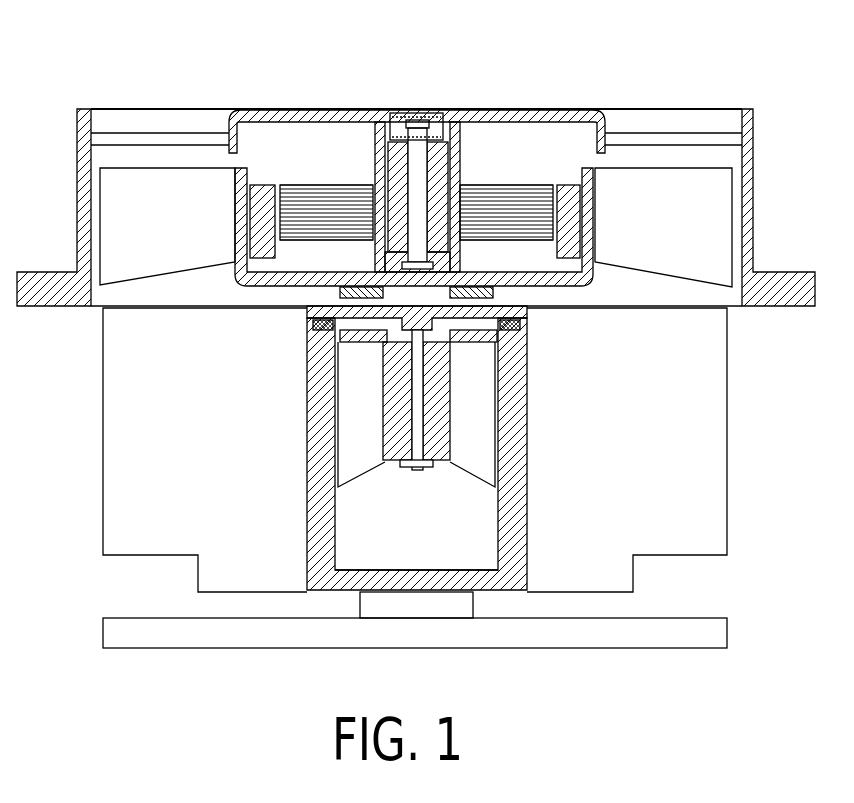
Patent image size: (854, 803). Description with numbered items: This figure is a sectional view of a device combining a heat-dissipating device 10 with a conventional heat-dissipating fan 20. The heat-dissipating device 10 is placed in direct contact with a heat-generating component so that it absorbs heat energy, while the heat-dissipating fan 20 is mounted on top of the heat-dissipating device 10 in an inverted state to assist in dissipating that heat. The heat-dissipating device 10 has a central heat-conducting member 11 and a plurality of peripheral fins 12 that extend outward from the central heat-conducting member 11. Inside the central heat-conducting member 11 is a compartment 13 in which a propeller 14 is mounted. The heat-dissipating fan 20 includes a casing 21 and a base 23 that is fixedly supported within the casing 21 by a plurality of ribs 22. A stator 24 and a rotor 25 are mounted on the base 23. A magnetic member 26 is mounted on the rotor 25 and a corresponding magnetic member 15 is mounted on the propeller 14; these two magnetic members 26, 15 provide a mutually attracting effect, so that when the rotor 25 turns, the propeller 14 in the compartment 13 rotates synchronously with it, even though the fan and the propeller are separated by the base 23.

The heat-dissipating device 10 is at (470, 477).
The central heat-conducting member 11 is at (323, 508).
The peripheral fins 12 is at (700, 493).
The compartment 13 is at (478, 521).
The propeller 14 is at (353, 425).
The magnetic member 15 is at (307, 343).
The heat-dissipating fan 20 is at (420, 184).
The casing 21 is at (753, 180).
The ribs 22 is at (692, 135).
The base 23 is at (355, 110).
The stator 24 is at (305, 190).
The rotor 25 is at (527, 282).
The magnetic member 26 is at (340, 288).